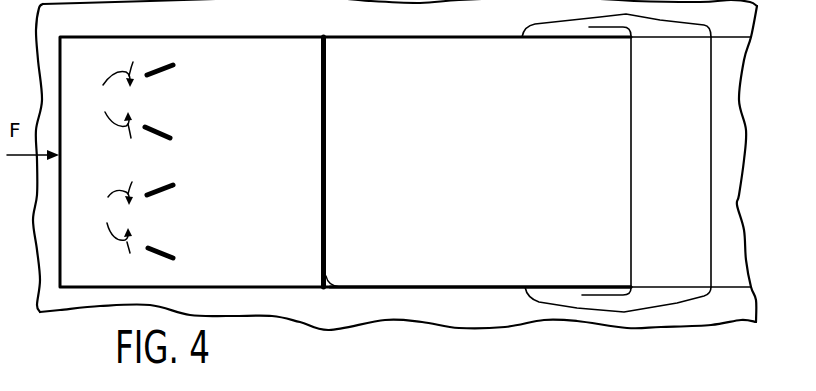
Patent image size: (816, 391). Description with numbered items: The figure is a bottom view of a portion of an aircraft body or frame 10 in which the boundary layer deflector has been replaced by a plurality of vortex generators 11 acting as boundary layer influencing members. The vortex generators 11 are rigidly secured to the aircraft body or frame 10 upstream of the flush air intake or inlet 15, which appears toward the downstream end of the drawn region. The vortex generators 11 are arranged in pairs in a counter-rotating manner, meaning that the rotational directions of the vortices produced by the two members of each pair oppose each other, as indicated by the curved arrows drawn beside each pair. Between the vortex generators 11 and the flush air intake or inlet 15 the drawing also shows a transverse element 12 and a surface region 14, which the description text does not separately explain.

The aircraft body or frame 10 is at (62, 316).
The vortex generators 11 is at (158, 75).
The partition 12 is at (338, 287).
The surface 14 is at (434, 268).
The flush air intake or inlet 15 is at (631, 225).